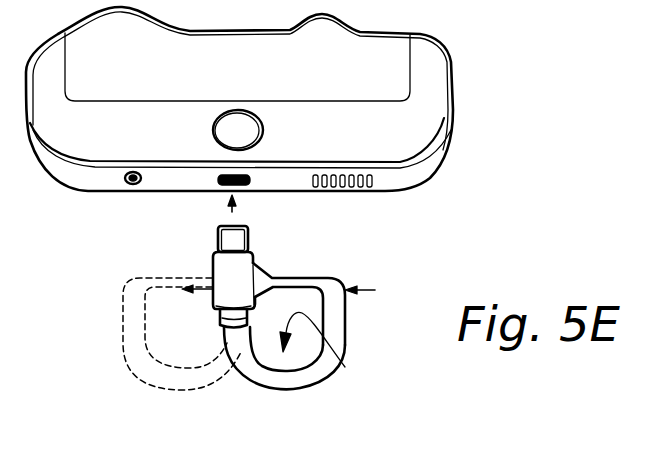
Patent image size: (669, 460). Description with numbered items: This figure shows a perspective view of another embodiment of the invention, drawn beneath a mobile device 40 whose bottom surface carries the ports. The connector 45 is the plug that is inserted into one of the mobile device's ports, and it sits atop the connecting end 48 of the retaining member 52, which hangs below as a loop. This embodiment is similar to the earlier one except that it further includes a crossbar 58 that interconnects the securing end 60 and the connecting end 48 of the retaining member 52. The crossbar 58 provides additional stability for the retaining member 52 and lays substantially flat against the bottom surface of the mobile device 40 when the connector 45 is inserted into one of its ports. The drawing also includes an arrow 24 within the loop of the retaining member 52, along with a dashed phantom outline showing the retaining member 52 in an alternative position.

The mobile device 40 is at (590, 0).
The connector 45 is at (243, 243).
The connecting end 48 is at (225, 276).
The crossbar 58 is at (297, 277).
The retaining member 52 is at (274, 389).
The rotation direction arrow 24 is at (345, 367).
The securing end 60 is at (347, 286).